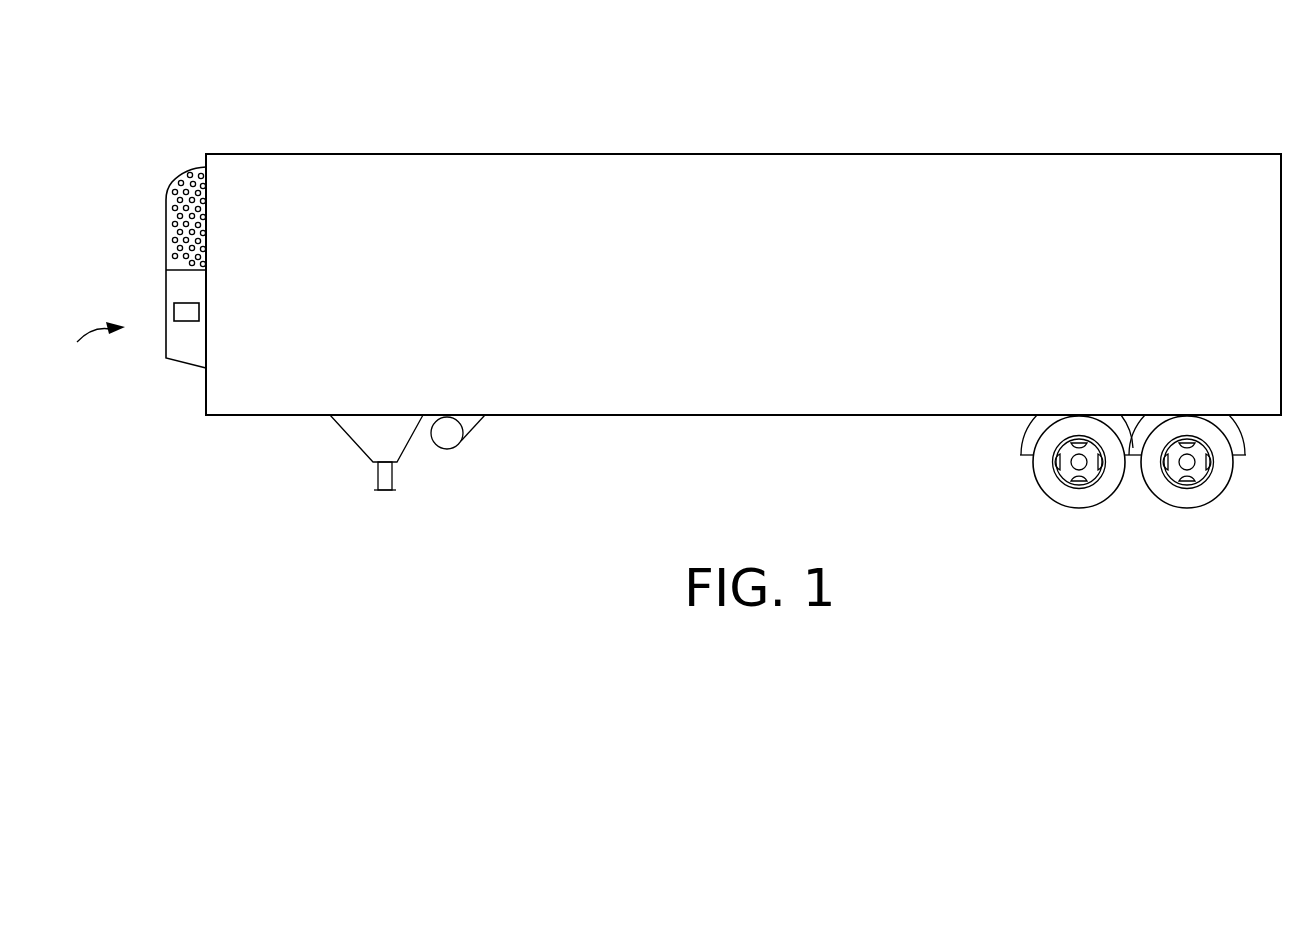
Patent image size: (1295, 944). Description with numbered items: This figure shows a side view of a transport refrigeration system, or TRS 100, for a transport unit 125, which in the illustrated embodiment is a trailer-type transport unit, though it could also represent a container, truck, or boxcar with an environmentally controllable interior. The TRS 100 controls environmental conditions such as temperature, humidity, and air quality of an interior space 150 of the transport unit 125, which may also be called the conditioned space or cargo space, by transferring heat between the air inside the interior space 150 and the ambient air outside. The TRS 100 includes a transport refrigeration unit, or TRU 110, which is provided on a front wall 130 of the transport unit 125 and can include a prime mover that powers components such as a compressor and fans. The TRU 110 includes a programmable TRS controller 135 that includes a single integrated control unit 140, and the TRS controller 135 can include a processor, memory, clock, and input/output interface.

The transport refrigeration system (TRS) 100 is at (468, 62).
The transport refrigeration unit (TRU) 110 is at (181, 173).
The transport unit 125 is at (405, 153).
The front wall 130 is at (205, 400).
The TRS controller 135 is at (80, 339).
The single integrated control unit 140 is at (199, 312).
The interior space 150 is at (732, 398).